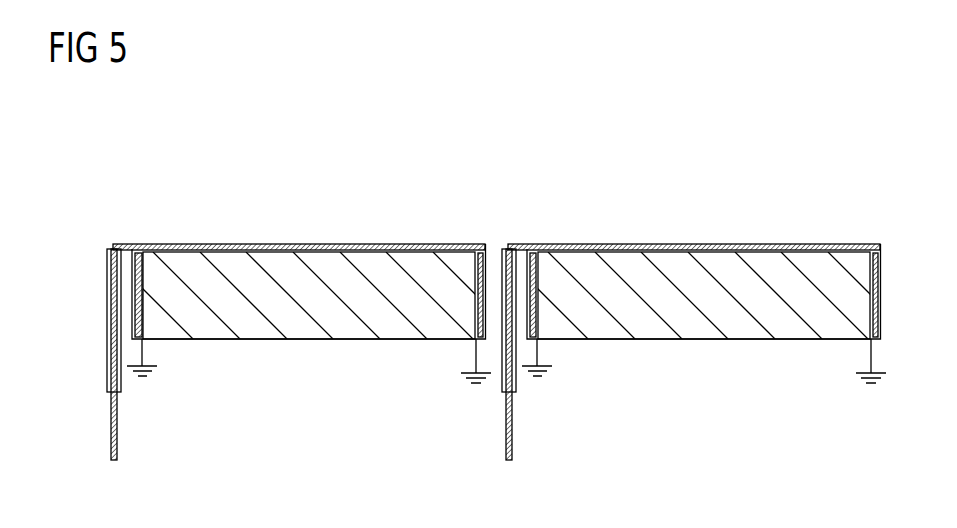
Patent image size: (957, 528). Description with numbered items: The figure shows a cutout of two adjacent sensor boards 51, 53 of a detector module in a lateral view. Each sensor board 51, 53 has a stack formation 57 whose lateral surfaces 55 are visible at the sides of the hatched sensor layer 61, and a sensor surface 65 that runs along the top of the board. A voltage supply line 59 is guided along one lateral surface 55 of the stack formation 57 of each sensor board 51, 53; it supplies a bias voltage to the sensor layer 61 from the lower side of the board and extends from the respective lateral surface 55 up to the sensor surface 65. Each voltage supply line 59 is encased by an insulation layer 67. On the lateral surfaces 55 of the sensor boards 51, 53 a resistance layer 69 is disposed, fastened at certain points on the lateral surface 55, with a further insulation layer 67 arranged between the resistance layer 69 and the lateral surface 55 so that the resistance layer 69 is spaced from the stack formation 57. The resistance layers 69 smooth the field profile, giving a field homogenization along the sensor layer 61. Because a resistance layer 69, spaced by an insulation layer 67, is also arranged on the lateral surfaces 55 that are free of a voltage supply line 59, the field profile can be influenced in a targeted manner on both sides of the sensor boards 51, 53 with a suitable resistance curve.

The sensor board 51 is at (246, 171).
The sensor board 53 is at (641, 171).
The lateral surface 55 is at (284, 277).
The stack formation 57 is at (101, 246).
The voltage supply line 59 is at (118, 430).
The sensor layer 61 is at (326, 262).
The sensor surface 65 is at (181, 244).
The insulation layer 67 is at (132, 292).
The resistance layer 69 is at (132, 315).